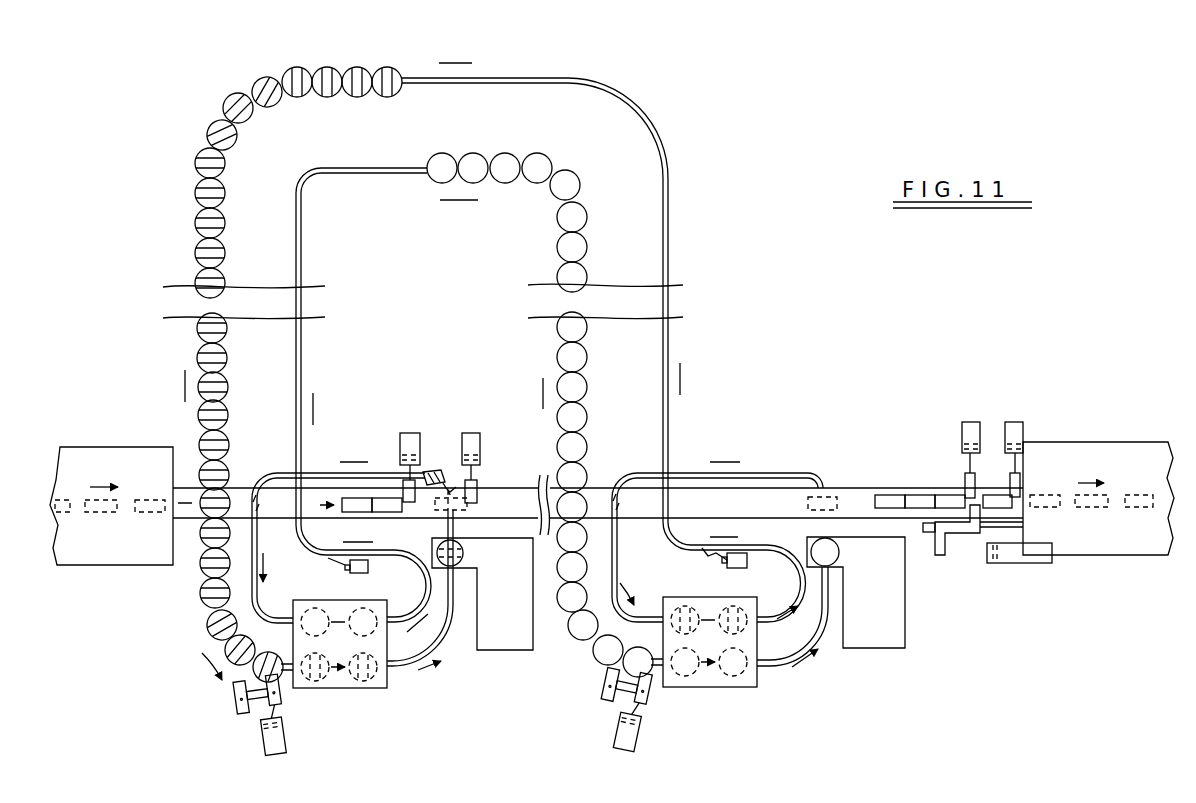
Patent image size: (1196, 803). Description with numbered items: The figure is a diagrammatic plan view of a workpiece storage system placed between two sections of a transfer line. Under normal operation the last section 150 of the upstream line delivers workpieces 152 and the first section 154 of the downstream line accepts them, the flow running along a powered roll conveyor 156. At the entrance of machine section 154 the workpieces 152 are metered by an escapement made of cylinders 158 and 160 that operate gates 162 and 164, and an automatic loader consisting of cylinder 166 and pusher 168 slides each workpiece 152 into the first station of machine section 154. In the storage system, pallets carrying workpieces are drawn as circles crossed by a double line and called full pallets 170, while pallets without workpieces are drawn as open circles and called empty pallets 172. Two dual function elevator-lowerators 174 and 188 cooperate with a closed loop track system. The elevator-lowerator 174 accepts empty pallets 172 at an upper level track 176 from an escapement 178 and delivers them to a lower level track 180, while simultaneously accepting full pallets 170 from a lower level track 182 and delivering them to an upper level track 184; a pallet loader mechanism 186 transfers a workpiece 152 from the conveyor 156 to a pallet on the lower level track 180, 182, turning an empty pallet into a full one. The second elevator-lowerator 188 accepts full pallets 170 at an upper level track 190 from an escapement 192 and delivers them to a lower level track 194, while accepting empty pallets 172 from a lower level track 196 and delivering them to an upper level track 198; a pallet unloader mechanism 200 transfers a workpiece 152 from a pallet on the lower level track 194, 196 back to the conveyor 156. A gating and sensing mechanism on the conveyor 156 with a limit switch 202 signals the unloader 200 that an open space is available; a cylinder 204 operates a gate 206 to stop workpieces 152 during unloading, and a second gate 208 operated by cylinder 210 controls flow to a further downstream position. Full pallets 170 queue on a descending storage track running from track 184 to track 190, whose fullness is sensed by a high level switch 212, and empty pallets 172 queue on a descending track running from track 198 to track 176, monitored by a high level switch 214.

The last section of the upstream transfer line 150 is at (108, 566).
The workpieces 152 is at (150, 515).
The first section of the downstream transfer line 154 is at (1103, 562).
The powered roll conveyor 156 is at (273, 525).
The cylinder 158 is at (965, 421).
The cylinder 160 is at (1020, 421).
The gate 162 is at (965, 481).
The gate 164 is at (1022, 480).
The cylinder 166 is at (1011, 565).
The pusher 168 is at (956, 537).
The full pallets 170 is at (388, 66).
The empty pallets 172 is at (450, 155).
The dual function elevator-lowerator 174 is at (732, 690).
The upper level track 176 is at (653, 652).
The escapement 178 is at (612, 700).
The lower level track 180 is at (773, 665).
The lower level track 182 is at (648, 615).
The upper level track 184 is at (761, 624).
The pallet loader mechanism 186 is at (878, 648).
The dual function elevator-lowerator 188 is at (345, 690).
The upper level track 190 is at (293, 653).
The escapement 192 is at (240, 712).
The lower level track 194 is at (400, 675).
The lower level track 196 is at (265, 608).
The upper level track 198 is at (397, 605).
The pallet unloader mechanism 200 is at (490, 652).
The limit switch 202 is at (437, 470).
The cylinder 204 is at (411, 432).
The gate 206 is at (405, 478).
The second gate 208 is at (478, 490).
The cylinder 210 is at (474, 431).
The high level switch 212 is at (731, 570).
The high level switch 214 is at (370, 576).